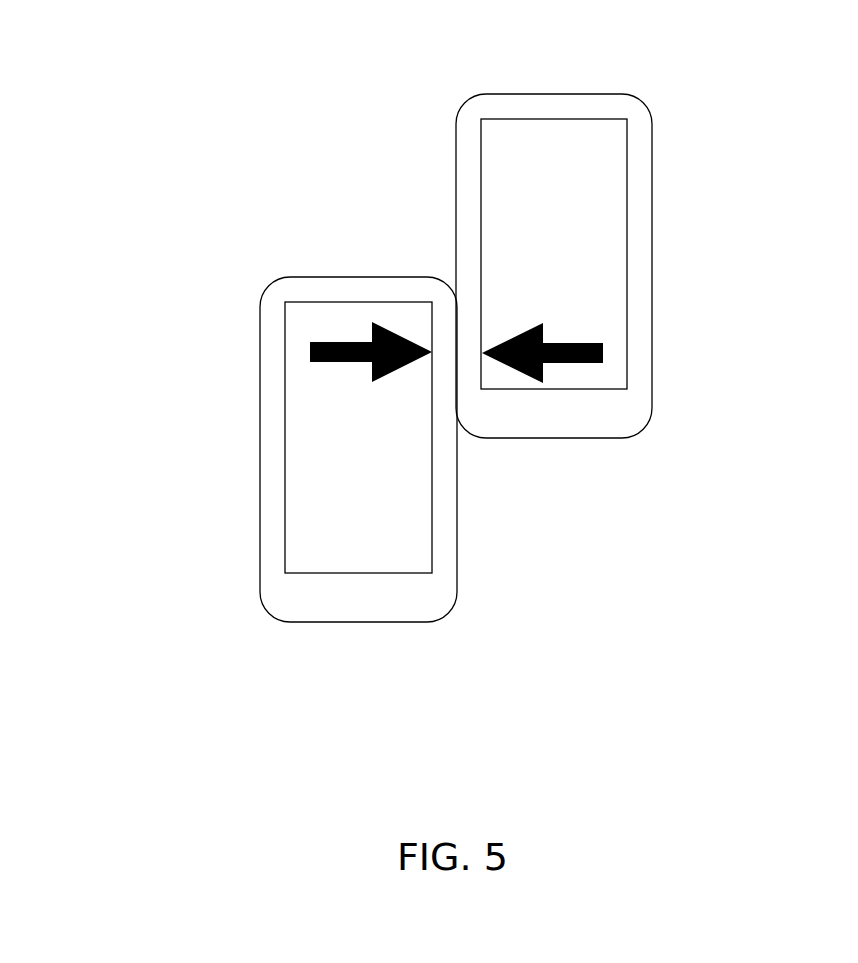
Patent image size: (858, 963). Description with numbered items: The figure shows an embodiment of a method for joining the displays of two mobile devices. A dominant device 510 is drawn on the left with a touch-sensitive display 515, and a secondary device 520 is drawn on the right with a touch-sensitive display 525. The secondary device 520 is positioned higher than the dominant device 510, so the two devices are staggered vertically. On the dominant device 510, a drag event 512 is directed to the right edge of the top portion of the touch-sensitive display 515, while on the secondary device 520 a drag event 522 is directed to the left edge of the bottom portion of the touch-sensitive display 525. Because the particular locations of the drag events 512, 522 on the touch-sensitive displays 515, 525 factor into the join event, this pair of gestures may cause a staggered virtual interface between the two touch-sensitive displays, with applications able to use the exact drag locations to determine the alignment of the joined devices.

The dominant device 510 is at (260, 487).
The drag event 512 is at (322, 342).
The touch-sensitive display 515 is at (383, 487).
The secondary device 520 is at (652, 243).
The drag event 522 is at (568, 363).
The touch-sensitive display 525 is at (579, 168).